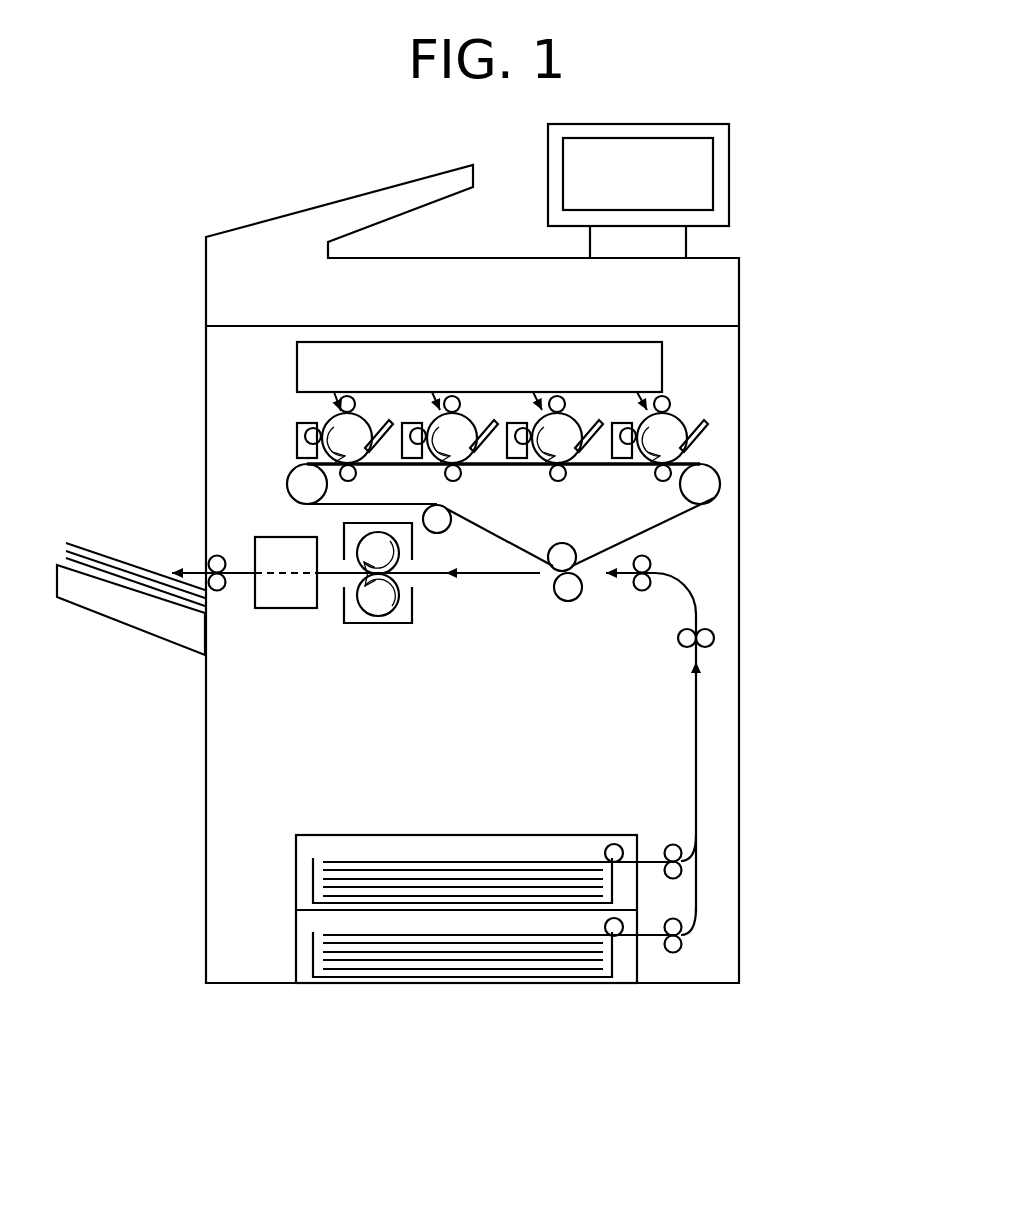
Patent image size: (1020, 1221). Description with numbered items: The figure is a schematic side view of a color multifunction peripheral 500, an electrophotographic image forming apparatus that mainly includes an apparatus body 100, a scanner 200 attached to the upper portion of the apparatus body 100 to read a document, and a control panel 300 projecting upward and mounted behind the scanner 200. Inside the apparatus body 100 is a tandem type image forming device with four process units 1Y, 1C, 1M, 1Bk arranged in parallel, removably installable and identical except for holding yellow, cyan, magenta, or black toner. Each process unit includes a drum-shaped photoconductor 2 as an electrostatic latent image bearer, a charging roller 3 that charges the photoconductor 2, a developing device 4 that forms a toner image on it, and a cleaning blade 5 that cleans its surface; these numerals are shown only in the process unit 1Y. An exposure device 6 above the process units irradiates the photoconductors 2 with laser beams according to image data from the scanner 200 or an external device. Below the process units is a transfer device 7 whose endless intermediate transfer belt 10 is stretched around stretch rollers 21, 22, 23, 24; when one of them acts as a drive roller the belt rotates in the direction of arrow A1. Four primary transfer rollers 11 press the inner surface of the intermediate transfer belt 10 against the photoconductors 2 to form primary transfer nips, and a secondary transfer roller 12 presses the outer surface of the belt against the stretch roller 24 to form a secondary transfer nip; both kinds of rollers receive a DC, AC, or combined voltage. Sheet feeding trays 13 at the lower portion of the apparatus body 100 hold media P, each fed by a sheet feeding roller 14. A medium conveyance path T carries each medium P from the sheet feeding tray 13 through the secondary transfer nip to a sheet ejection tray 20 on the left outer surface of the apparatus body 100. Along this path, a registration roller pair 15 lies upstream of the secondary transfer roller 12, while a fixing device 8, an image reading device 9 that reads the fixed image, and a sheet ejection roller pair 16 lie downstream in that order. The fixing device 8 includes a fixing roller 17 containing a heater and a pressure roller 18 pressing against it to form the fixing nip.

The color multifunction peripheral 500 is at (772, 240).
The apparatus body 100 is at (206, 428).
The scanner 200 is at (206, 278).
The control panel 300 is at (730, 170).
The exposure device 6 is at (466, 342).
The process unit 1Y is at (315, 403).
The process unit 1C is at (424, 411).
The process unit 1M is at (529, 411).
The process unit 1Bk is at (686, 411).
The photoconductor 2 is at (333, 411).
The charging roller 3 is at (347, 395).
The developing device 4 is at (297, 441).
The cleaning blade 5 is at (380, 427).
The primary transfer roller 11 is at (356, 474).
The transfer device 7 is at (279, 484).
The stretch roller 21 is at (711, 483).
The intermediate transfer belt 10 is at (680, 518).
The stretch roller 23 is at (452, 515).
The stretch roller 24 is at (562, 552).
The secondary transfer roller 12 is at (568, 601).
The medium conveyance path T is at (507, 578).
The arrow A1 is at (434, 731).
The registration roller pair 15 is at (651, 580).
The sheet ejection roller pair 16 is at (224, 580).
The stretch roller 22 is at (286, 601).
The image reading device 9 is at (289, 612).
The fixing device 8 is at (408, 614).
The fixing roller 17 is at (400, 545).
The pressure roller 18 is at (394, 604).
The sheet ejection tray 20 is at (127, 612).
The sheet feeding tray 13 is at (454, 914).
The medium P is at (417, 860).
The sheet feeding roller 14 is at (614, 844).